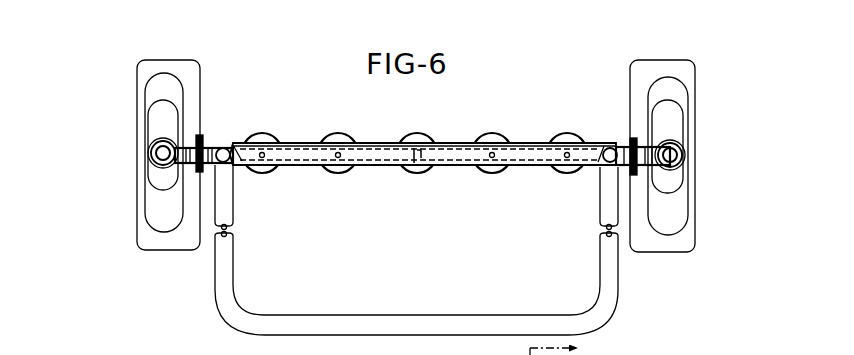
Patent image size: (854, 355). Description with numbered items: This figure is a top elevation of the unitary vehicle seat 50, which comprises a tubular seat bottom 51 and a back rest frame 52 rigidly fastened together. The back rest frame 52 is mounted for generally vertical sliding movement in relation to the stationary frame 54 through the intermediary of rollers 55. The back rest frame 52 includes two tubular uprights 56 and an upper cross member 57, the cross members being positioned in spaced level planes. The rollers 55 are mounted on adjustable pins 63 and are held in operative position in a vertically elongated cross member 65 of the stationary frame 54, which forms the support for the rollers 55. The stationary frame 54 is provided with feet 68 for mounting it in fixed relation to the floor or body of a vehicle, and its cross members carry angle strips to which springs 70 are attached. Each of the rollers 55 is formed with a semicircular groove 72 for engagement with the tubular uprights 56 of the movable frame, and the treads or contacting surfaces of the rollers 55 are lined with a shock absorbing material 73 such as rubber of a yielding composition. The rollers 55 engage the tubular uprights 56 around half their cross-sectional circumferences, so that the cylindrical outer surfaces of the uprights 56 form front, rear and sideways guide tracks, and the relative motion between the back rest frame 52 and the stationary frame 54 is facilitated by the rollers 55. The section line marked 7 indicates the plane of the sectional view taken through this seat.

The unitary vehicle seat 50 is at (327, 218).
The tubular seat bottom 51 is at (375, 323).
The back rest frame 52 is at (505, 187).
The stationary frame 54 is at (133, 122).
The rollers 55 is at (212, 140).
The tubular uprights 56 is at (228, 157).
The upper cross member 57 is at (465, 158).
The adjustable pins 63 is at (203, 140).
The upper vertically elongated cross member 65 is at (450, 140).
The feet 68 is at (157, 197).
The springs 70 is at (338, 133).
The semicircular groove 72 is at (676, 152).
The shock absorbing material 73 is at (190, 142).
The section line 7- 7 is at (562, 345).